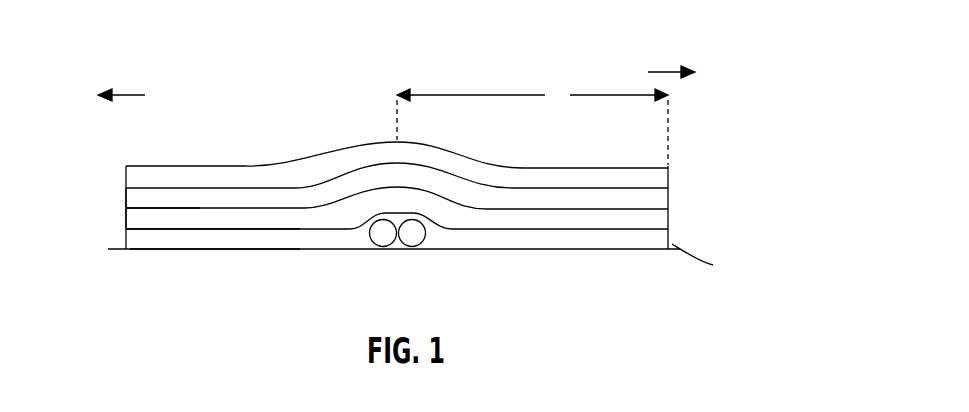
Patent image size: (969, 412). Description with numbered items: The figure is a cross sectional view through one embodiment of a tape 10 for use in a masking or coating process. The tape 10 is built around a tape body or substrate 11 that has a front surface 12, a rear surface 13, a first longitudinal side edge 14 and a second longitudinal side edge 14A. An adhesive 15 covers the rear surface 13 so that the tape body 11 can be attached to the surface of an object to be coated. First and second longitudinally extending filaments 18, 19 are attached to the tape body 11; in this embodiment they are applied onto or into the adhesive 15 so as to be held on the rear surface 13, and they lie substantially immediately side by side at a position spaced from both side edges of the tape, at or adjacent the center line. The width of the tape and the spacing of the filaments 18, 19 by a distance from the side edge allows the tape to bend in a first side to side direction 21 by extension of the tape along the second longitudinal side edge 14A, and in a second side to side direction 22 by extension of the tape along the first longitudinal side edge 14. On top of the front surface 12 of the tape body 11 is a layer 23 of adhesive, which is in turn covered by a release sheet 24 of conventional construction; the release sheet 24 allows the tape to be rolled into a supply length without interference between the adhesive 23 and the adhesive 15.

The tape 10 is at (490, 79).
The tape body 11 is at (670, 218).
The front surface 12 is at (164, 207).
The rear surface 13 is at (194, 230).
The first longitudinal side edge 14 is at (128, 216).
The second longitudinal side edge 14A is at (670, 228).
The adhesive 15 is at (227, 241).
The first longitudinally extending filament 18 is at (412, 240).
The second longitudinally extending filament 19 is at (383, 240).
The first side to side direction 21 is at (130, 95).
The second side to side direction 22 is at (666, 72).
The layer of adhesive 23 is at (670, 198).
The release sheet 24 is at (670, 178).